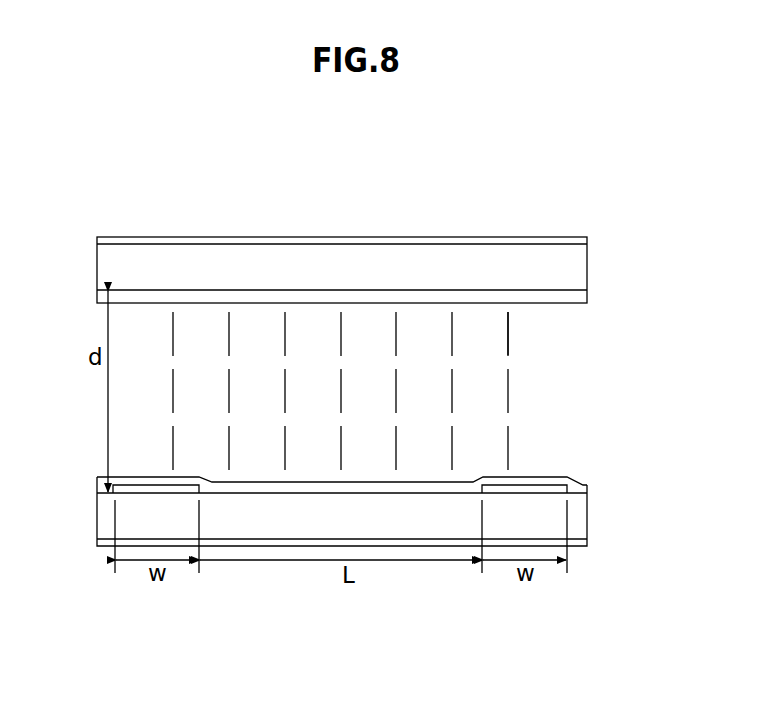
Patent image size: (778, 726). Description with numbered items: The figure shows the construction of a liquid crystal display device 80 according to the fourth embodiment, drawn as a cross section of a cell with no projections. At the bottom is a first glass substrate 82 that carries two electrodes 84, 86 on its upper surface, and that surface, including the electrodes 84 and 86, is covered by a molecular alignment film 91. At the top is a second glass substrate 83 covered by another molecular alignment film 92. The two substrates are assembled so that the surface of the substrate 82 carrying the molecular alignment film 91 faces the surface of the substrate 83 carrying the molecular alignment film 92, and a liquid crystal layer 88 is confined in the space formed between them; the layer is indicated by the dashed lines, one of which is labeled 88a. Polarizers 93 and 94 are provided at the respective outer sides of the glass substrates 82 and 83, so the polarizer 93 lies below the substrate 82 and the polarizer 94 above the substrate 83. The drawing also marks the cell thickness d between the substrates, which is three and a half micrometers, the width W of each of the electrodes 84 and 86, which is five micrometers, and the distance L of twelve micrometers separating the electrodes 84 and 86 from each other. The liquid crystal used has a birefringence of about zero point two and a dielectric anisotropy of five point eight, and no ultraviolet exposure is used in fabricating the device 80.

The liquid crystal display device 80 is at (78, 193).
The first glass substrate 82 is at (430, 535).
The second glass substrate 83 is at (424, 258).
The electrode 84 is at (118, 485).
The electrode 86 is at (565, 485).
The liquid crystal layer 88 is at (532, 372).
The electric field line 88a is at (510, 335).
The molecular alignment film 91 is at (588, 488).
The molecular alignment film 92 is at (587, 297).
The polarizer 93 is at (588, 545).
The polarizer 94 is at (587, 242).